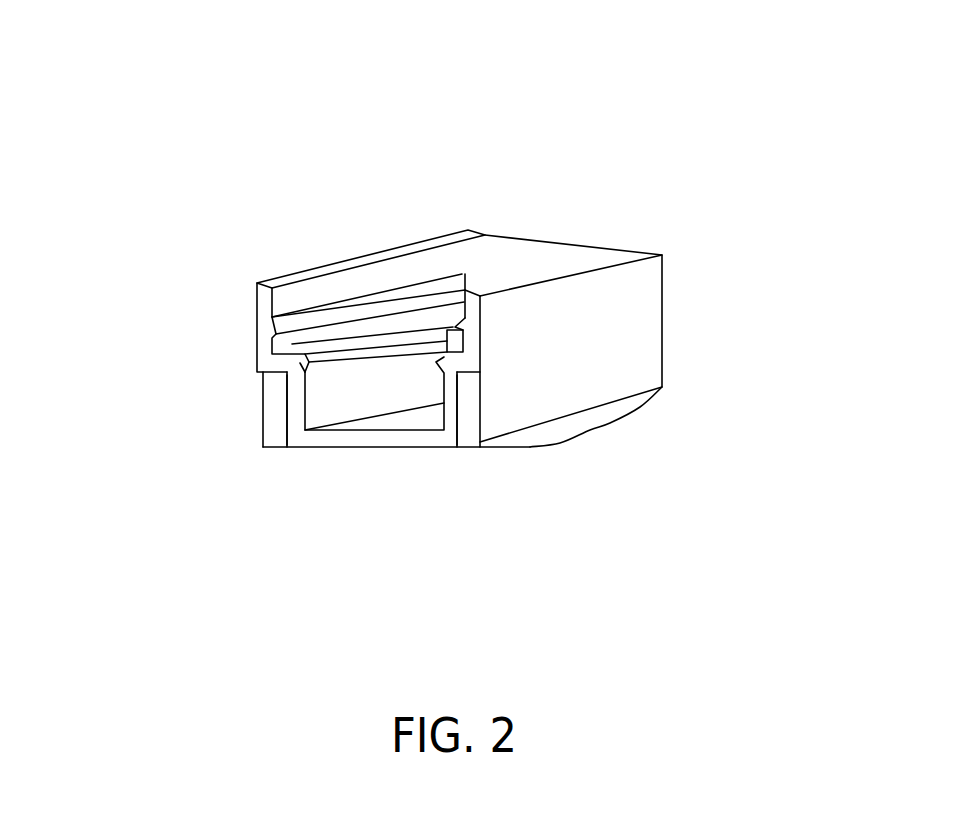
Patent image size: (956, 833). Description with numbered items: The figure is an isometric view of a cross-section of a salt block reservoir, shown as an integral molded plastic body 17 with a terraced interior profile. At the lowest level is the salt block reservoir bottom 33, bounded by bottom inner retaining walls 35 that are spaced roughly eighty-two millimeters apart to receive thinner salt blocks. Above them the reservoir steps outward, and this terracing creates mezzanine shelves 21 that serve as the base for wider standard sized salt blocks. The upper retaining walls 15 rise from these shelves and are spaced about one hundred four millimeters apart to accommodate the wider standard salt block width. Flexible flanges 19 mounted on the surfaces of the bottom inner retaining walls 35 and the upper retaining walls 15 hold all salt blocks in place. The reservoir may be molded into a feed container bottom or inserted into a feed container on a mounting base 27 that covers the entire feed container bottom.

The upper retaining walls 15 is at (300, 293).
The body 17 is at (607, 340).
The flexible flanges 19 is at (470, 290).
The mezzanine shelves 21 is at (447, 338).
The mounting base 27 is at (545, 448).
The salt block reservoir bottom 33 is at (390, 450).
The bottom inner retaining walls 35 is at (287, 397).